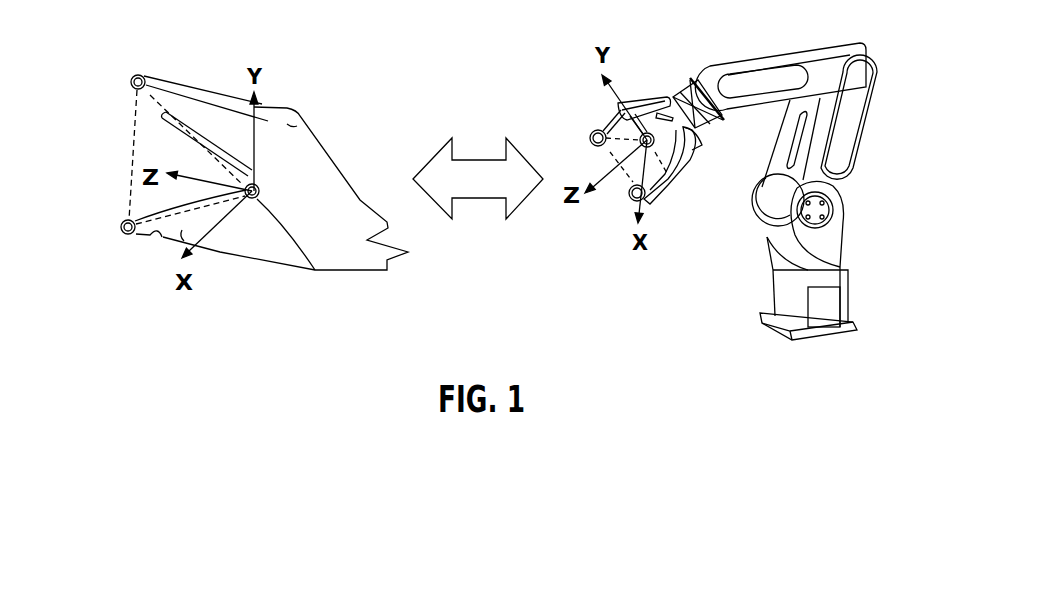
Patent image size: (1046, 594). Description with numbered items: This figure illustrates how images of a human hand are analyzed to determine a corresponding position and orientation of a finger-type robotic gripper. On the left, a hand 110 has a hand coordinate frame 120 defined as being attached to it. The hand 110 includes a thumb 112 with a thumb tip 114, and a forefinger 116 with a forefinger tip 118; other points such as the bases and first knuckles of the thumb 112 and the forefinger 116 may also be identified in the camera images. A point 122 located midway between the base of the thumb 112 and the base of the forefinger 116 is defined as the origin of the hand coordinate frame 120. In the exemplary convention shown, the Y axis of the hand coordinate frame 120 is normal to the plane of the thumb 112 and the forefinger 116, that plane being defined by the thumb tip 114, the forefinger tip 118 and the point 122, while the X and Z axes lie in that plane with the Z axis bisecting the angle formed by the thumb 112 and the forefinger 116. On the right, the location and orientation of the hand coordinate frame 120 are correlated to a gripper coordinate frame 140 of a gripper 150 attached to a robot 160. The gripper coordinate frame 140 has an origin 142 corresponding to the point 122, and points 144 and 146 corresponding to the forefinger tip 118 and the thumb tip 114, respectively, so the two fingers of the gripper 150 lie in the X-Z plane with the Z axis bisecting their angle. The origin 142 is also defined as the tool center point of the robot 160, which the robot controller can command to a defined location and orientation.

The hand 110 is at (310, 150).
The thumb 112 is at (166, 242).
The thumb tip 114 is at (121, 232).
The forefinger 116 is at (205, 97).
The forefinger tip 118 is at (131, 77).
The hand coordinate frame 120 is at (240, 218).
The point 122 is at (257, 202).
The gripper coordinate frame 140 is at (703, 70).
The origin 142 is at (620, 110).
The point 144 is at (590, 131).
The point 146 is at (630, 200).
The gripper 150 is at (686, 193).
The robot 160 is at (864, 206).